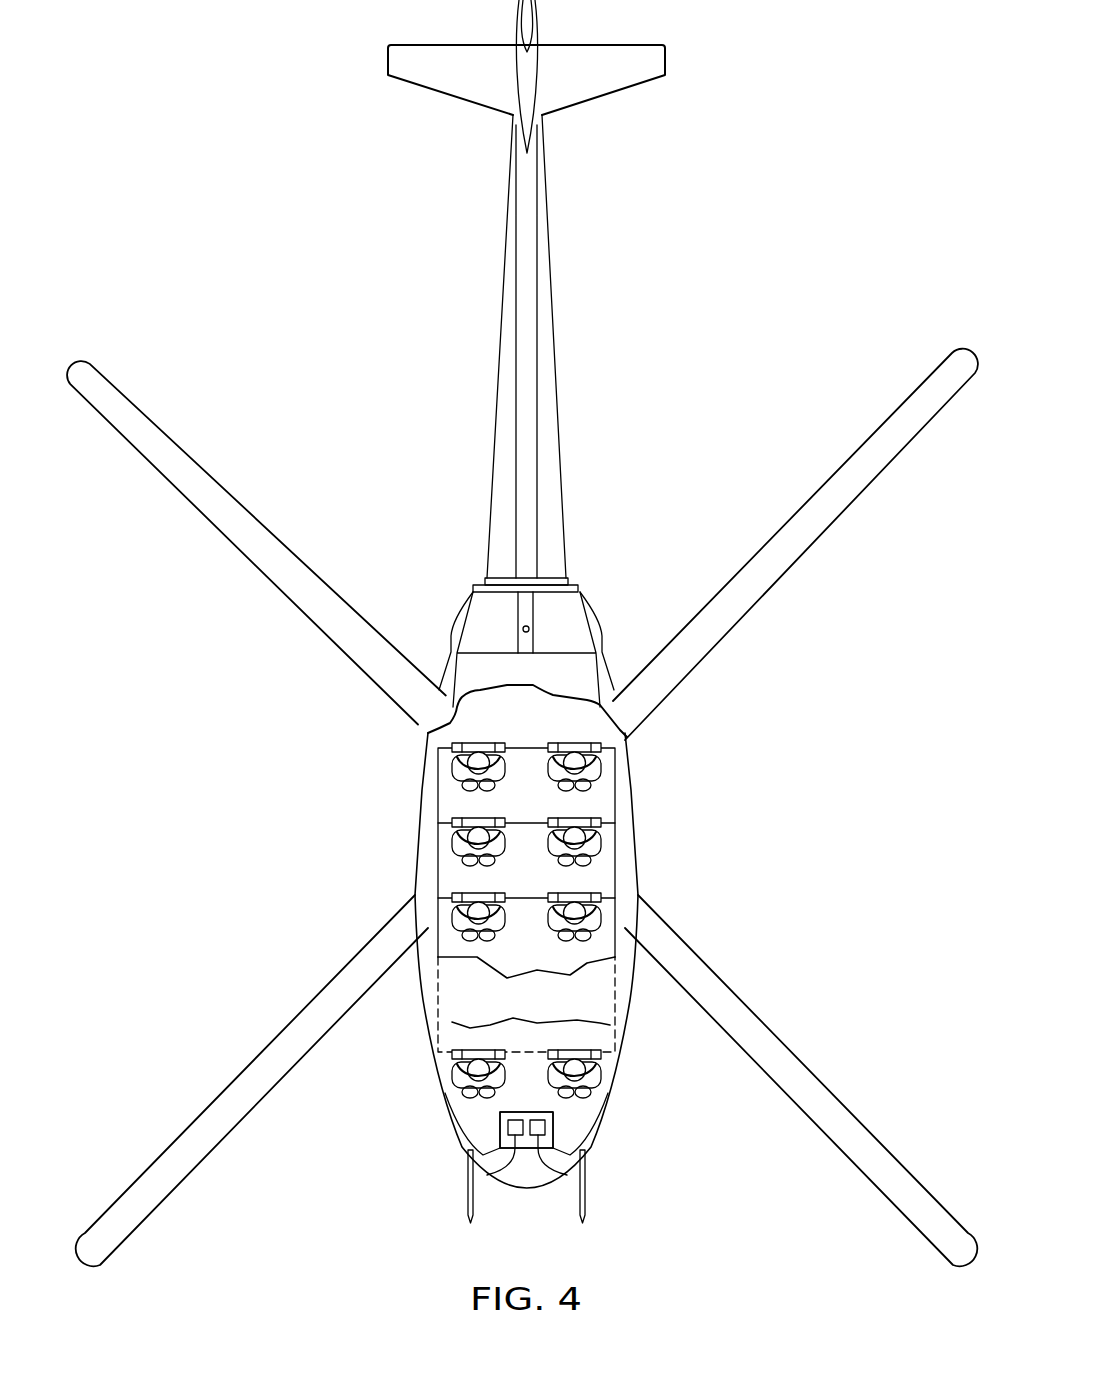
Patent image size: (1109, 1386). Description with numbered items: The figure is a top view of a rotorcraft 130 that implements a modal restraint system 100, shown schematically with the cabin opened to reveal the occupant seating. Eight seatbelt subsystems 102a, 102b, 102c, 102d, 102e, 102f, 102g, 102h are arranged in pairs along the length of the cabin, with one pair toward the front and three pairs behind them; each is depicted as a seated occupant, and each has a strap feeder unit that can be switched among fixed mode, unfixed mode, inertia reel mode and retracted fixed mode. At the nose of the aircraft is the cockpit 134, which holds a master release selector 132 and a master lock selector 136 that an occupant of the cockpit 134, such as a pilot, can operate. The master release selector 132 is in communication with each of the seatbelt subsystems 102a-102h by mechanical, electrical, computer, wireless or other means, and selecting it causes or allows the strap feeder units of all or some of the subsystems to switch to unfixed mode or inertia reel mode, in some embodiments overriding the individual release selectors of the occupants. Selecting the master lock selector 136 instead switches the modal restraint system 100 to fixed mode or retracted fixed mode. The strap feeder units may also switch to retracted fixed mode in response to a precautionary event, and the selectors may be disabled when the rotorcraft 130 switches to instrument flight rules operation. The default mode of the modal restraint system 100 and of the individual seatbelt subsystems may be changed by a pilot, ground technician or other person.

The rotorcraft 130 is at (366, 430).
The seatbelt subsystem 102a is at (455, 1076).
The seatbelt subsystem 102b is at (602, 1076).
The seatbelt subsystem 102c is at (455, 915).
The seatbelt subsystem 102d is at (600, 915).
The seatbelt subsystem 102e is at (455, 843).
The seatbelt subsystem 102f is at (600, 843).
The seatbelt subsystem 102g is at (455, 768).
The seatbelt subsystem 102h is at (600, 768).
The modal restraint system 100 is at (580, 1128).
The cockpit 134 is at (500, 1118).
The master lock selector 136 is at (468, 1172).
The master release selector 132 is at (586, 1172).